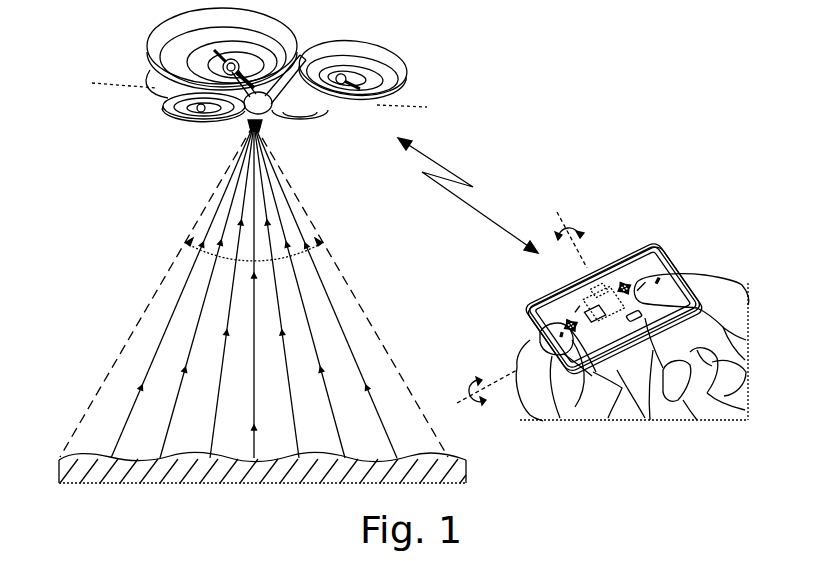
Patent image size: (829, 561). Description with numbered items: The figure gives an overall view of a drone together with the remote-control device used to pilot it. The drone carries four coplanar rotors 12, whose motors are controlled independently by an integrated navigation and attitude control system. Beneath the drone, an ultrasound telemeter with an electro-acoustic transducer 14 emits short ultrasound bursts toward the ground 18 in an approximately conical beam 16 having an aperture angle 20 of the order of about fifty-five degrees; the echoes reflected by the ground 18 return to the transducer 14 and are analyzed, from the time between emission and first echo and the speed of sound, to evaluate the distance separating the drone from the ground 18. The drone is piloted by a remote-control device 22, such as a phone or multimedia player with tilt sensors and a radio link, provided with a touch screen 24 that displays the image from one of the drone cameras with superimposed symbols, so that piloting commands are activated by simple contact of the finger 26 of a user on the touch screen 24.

The coplanar rotors 12 is at (168, 57).
The electro-acoustic transducer 14 is at (248, 128).
The conical beam 16 is at (140, 318).
The ground 18 is at (263, 457).
The aperture angle 20 is at (300, 250).
The remote-control device 22 is at (657, 235).
The touch screen 24 is at (622, 278).
The finger 26 is at (694, 270).